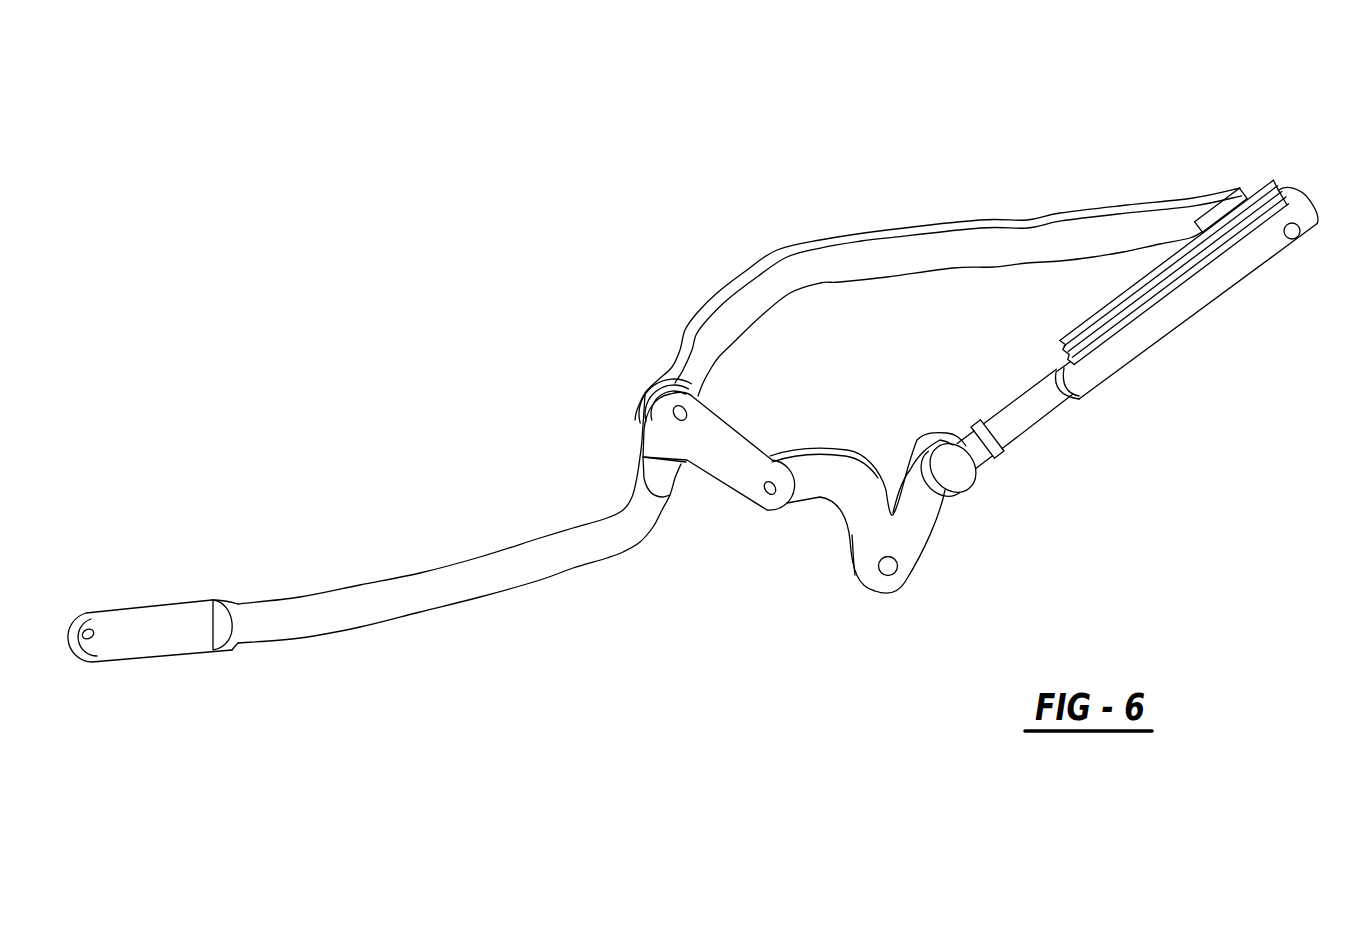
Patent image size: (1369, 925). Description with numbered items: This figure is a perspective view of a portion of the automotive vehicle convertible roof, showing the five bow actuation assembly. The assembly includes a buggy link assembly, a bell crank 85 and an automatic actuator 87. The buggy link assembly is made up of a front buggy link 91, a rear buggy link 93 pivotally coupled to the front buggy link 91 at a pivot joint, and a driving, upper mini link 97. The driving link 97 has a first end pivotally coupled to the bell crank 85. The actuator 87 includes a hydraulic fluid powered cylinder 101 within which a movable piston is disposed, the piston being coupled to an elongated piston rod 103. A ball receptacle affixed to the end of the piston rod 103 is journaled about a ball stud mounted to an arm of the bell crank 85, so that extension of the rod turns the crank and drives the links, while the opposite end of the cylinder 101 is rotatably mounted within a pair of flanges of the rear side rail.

The bell crank 85 is at (862, 513).
The automatic actuator 87 is at (1322, 203).
The front buggy link 91 is at (853, 262).
The rear buggy link 93 is at (380, 600).
The driving, upper mini link 97 is at (728, 465).
The hydraulic fluid powered cylinder 101 is at (1163, 320).
The piston rod 103 is at (1020, 423).